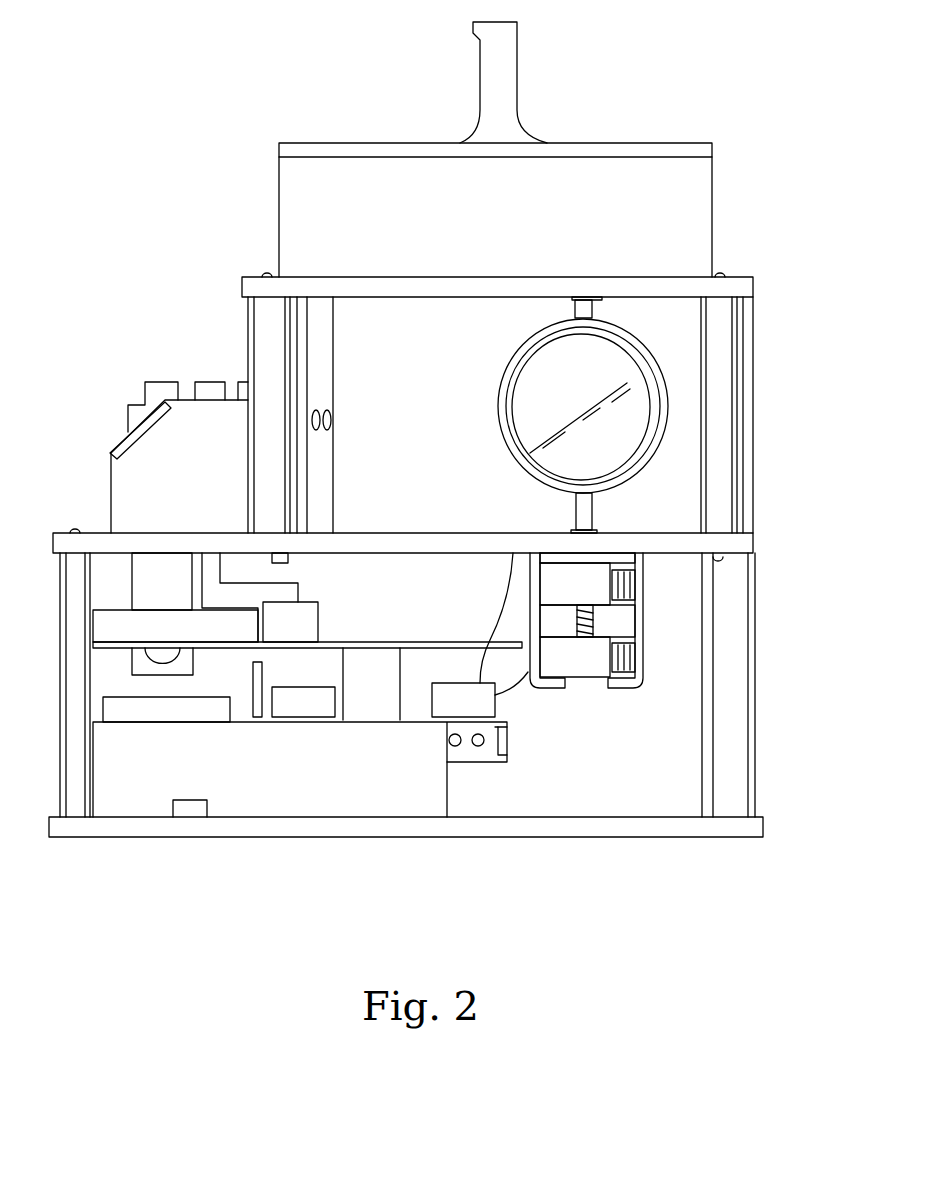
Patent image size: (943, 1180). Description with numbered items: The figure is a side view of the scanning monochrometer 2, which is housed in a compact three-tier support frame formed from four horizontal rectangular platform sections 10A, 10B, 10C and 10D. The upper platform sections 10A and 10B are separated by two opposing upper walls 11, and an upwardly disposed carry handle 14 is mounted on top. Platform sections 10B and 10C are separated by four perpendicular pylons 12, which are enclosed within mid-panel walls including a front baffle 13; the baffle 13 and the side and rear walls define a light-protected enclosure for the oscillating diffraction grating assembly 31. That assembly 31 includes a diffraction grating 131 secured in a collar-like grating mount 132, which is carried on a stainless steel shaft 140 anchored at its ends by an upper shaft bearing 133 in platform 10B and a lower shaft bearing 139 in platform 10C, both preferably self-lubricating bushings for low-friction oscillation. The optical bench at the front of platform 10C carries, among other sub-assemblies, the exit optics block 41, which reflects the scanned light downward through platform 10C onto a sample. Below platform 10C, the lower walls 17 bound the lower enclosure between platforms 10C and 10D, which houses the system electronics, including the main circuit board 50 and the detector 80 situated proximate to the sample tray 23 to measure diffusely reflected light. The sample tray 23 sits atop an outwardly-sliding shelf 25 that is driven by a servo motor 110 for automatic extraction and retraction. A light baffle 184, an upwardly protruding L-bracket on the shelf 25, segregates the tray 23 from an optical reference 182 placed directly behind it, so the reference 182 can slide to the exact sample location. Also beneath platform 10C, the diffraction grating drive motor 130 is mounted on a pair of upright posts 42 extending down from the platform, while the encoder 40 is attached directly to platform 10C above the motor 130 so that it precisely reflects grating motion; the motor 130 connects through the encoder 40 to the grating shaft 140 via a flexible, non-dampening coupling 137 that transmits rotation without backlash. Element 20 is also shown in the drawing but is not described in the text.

The scanning monochrometer 2 is at (127, 150).
The carry handle 14 is at (512, 63).
The upper platform section 10A is at (712, 148).
The upper walls 11 is at (714, 213).
The platform section 10B is at (753, 287).
The pylons 12 is at (262, 327).
The front baffle 13 is at (321, 323).
The grating mount 132 is at (515, 347).
The diffraction grating 131 is at (575, 393).
The diffraction grating assembly 31 is at (667, 375).
The upper shaft bearing 133 is at (603, 297).
The shaft 140 is at (592, 310).
The lower shaft bearing 139 is at (592, 528).
The exit optics block 41 is at (130, 483).
The platform section 10C is at (753, 542).
The detector 80 is at (140, 572).
The main circuit board 50 is at (107, 623).
The bracket 20 is at (102, 650).
The sample tray 23 is at (107, 708).
The shelf 25 is at (150, 780).
The light baffle 184 is at (265, 675).
The optical reference 182 is at (320, 713).
The servo motor 110 is at (480, 712).
The encoder 40 is at (665, 652).
The upright posts 42 is at (533, 618).
The diffraction grating drive motor 130 is at (637, 622).
The flexible coupling 137 is at (593, 625).
The lower walls 17 is at (707, 647).
The platform section 10D is at (757, 826).